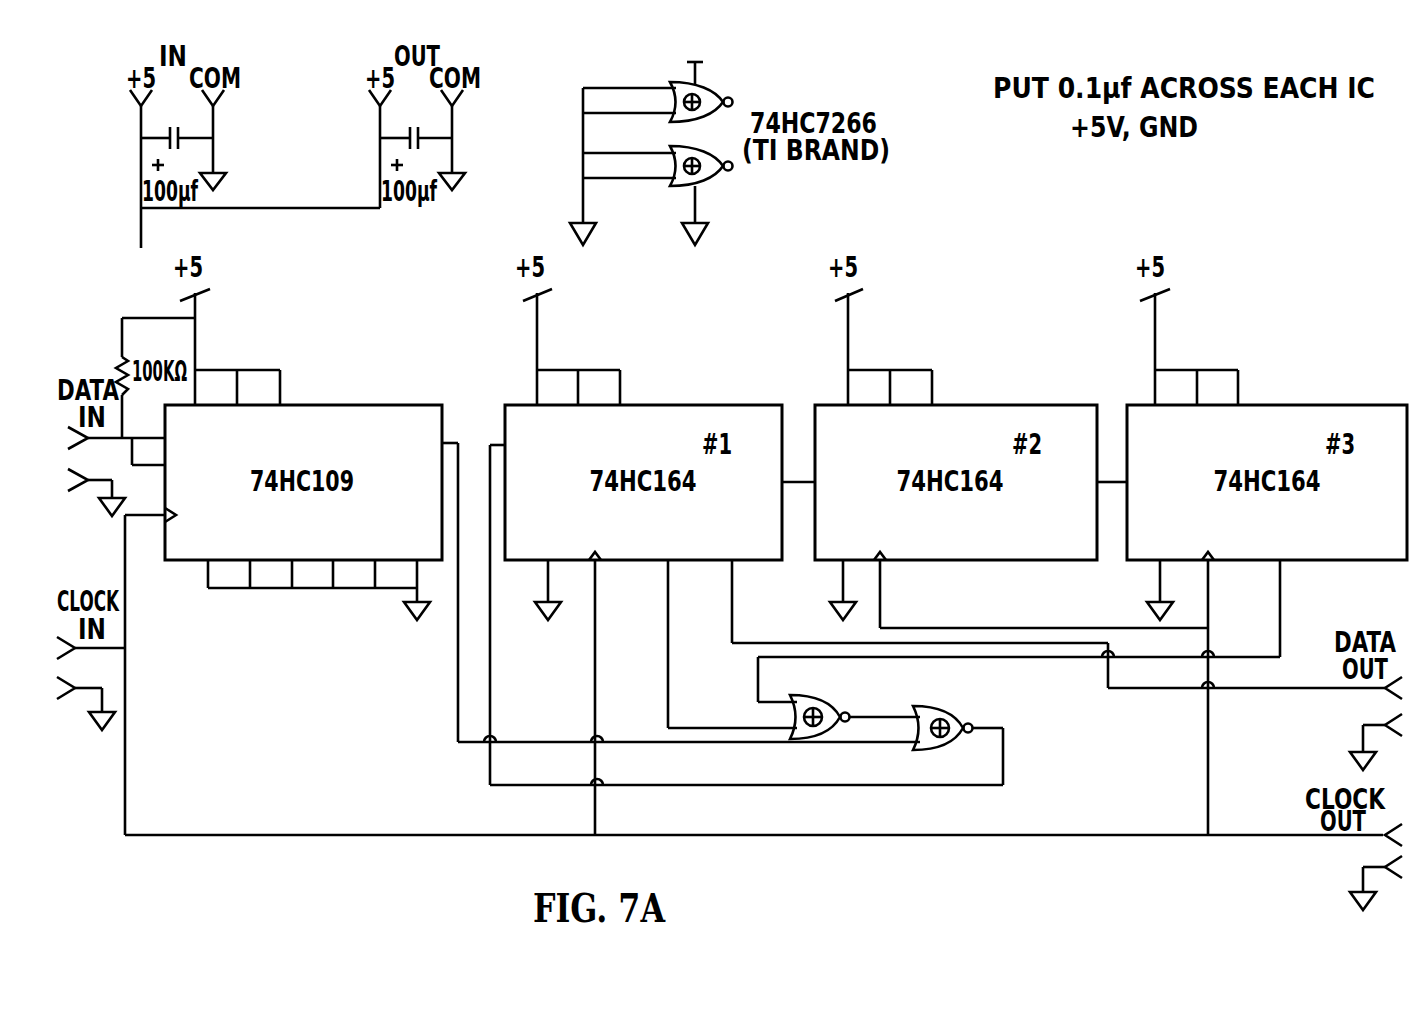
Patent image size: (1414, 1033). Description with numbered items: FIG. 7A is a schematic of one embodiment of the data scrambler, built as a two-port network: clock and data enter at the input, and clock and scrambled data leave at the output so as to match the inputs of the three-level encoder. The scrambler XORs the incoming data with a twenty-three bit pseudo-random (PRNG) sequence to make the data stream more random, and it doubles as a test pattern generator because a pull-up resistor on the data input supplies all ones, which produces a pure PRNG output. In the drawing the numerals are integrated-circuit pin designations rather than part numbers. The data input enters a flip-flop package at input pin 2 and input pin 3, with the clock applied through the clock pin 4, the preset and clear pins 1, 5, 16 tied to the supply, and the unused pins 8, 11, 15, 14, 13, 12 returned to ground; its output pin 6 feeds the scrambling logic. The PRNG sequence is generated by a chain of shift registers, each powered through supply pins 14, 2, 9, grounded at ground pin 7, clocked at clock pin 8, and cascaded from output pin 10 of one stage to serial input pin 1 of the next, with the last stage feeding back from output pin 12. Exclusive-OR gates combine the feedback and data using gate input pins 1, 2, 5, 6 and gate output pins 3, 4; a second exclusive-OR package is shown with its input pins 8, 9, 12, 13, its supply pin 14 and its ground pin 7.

The pin 1 is at (666, 595).
The pin 2 is at (646, 552).
The pin 3 is at (758, 574).
The pin 4 is at (564, 641).
The pin 5 is at (570, 558).
The pin 6 is at (671, 600).
The pin 7 (ground) 7 is at (854, 400).
The pin 8 (clock) 8 is at (706, 460).
The pin 9 is at (929, 274).
The pin 10 is at (870, 596).
The pin 11 is at (250, 557).
The pin 12 is at (848, 426).
The pin 13 is at (512, 381).
The pin 14 (Vcc) 14 is at (741, 321).
The pin 15 is at (290, 557).
The pin 16 is at (284, 404).